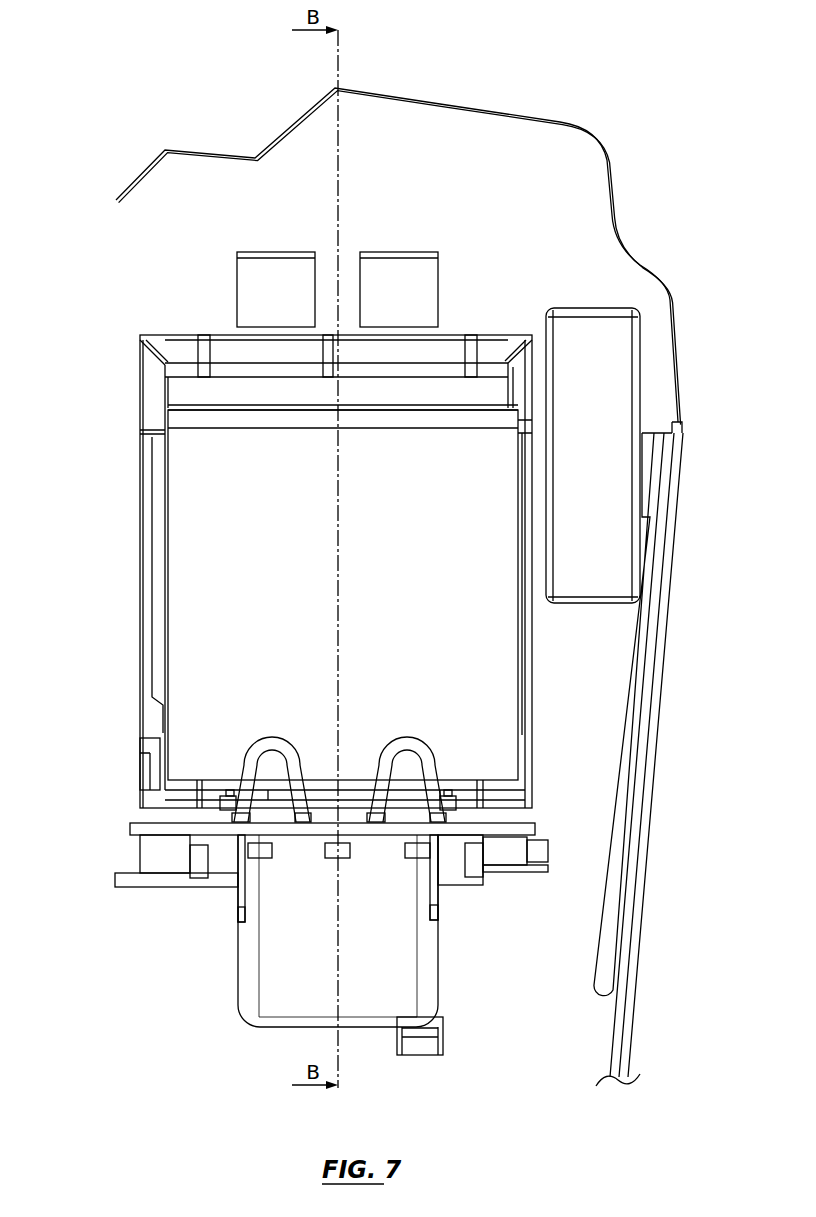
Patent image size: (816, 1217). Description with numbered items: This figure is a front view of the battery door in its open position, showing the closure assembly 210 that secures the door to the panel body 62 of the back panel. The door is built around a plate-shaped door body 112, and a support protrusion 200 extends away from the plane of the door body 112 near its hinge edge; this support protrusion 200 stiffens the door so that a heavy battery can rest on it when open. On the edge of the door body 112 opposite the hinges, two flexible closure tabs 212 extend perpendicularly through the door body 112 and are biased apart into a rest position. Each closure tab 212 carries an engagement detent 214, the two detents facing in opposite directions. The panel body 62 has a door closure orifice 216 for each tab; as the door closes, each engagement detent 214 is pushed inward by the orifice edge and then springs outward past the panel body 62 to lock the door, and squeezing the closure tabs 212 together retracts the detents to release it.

The panel body 62 is at (487, 142).
The door closure orifice 216 is at (285, 273).
The closure assembly 210 is at (392, 720).
The engagement detent 214 is at (225, 805).
The door body 112 is at (172, 830).
The support protrusion 200 is at (278, 976).
The closure tab 212 is at (243, 888).